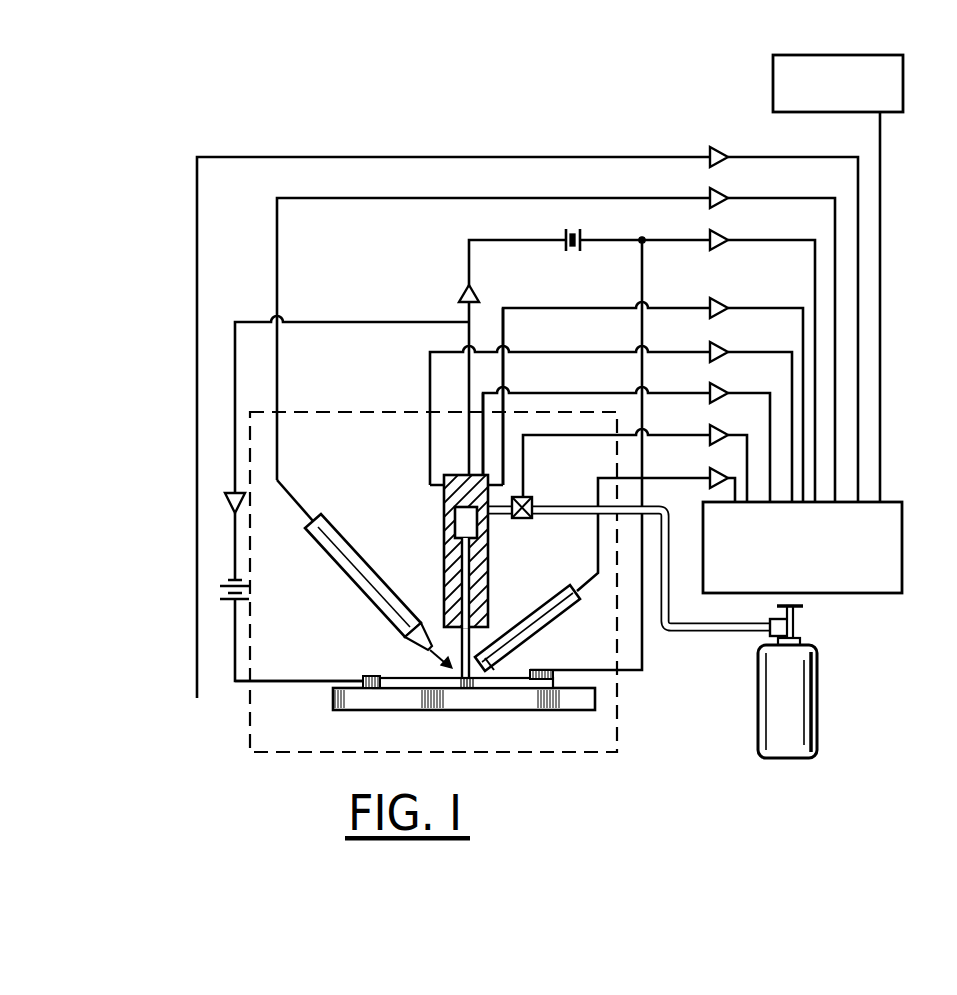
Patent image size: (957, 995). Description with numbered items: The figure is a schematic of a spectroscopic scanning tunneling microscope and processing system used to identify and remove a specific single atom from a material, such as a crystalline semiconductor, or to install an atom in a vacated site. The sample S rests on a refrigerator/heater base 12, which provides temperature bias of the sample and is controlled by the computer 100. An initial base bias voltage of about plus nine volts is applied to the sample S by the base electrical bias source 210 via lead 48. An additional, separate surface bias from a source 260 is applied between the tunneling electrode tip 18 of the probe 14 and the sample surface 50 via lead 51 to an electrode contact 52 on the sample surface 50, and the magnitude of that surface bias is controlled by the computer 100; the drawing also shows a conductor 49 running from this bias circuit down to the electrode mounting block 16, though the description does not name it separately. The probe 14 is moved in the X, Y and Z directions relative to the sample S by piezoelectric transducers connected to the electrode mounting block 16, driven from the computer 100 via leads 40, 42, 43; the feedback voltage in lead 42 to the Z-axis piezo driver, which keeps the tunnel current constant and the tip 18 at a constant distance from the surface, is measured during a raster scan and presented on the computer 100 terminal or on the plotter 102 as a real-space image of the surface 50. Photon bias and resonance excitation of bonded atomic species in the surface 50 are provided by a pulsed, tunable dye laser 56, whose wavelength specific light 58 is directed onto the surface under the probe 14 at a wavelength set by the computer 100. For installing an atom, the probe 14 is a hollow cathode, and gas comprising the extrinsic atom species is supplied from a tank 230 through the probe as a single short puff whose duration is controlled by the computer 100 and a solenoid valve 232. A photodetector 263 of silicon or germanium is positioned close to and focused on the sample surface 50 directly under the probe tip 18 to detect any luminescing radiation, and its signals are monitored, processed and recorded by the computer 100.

The refrigerator/heater base 12 is at (385, 711).
The probe 14 is at (471, 660).
The electrode mounting block 16 is at (488, 573).
The tunneling electrode tip 18 is at (473, 690).
The lead 40 is at (430, 458).
The lead 42 is at (483, 450).
The lead 43 is at (496, 476).
The lead 48 is at (303, 680).
The conductor 49 is at (468, 445).
The sample surface 50 is at (413, 675).
The lead 51 is at (642, 668).
The electrode contact 52 is at (540, 670).
The pulsed, tunable dye laser 56 is at (362, 565).
The wavelength specific light 58 is at (448, 660).
The computer 100 is at (850, 593).
The plotter 102 is at (773, 82).
The base electrical bias source 210 is at (228, 601).
The tank 230 is at (818, 703).
The solenoid valve 232 is at (522, 518).
The source 260 is at (583, 232).
The photodetector 263 is at (551, 622).
The sample S is at (365, 678).